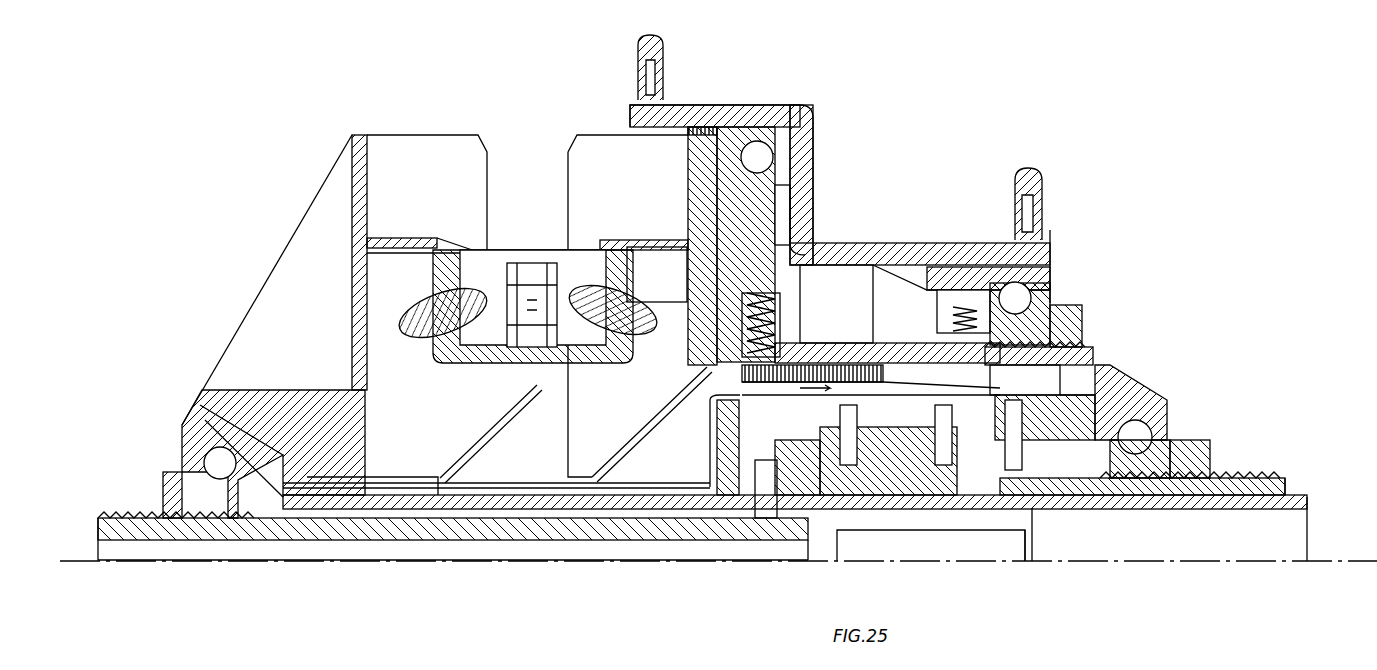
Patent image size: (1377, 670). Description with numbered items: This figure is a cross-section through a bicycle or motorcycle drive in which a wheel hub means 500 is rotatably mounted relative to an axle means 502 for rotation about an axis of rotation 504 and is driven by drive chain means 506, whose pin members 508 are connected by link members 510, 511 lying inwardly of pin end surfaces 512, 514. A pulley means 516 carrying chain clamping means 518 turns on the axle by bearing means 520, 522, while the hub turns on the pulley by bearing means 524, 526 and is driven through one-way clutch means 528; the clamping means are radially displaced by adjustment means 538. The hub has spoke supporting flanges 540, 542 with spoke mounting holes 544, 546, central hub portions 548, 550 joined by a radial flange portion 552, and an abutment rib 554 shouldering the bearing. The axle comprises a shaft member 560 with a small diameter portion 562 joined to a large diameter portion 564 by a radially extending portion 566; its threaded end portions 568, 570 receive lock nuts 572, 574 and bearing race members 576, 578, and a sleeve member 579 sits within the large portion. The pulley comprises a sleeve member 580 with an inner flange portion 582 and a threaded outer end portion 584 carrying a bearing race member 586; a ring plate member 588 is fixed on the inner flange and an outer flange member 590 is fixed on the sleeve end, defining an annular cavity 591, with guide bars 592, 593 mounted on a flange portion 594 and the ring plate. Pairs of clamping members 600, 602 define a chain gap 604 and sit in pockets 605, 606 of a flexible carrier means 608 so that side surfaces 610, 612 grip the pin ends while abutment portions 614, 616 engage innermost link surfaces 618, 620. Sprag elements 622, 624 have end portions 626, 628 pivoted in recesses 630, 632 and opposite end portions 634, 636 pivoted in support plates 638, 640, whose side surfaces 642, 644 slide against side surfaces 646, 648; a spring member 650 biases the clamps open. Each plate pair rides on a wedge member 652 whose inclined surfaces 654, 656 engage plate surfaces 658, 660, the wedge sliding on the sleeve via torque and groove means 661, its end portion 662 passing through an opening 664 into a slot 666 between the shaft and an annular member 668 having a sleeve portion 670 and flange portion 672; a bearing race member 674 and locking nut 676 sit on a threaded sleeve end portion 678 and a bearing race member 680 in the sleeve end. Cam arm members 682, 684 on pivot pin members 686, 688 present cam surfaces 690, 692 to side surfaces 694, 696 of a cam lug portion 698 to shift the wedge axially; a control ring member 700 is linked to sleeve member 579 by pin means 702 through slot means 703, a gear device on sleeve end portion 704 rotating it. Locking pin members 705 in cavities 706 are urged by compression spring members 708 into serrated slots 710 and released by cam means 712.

The wheel hub means 500 is at (822, 106).
The axle means 502 is at (346, 552).
The axis of rotation 504 is at (1258, 562).
The drive chain means 506 is at (535, 240).
The pin members 508 is at (445, 362).
The link member 510 is at (480, 240).
The link member 511 is at (487, 220).
The pin end surface 512 is at (470, 250).
The pin end surface 514 is at (540, 262).
The pulley means 516 is at (296, 186).
The chain clamping means 518 is at (405, 232).
The bearing means 520 is at (158, 431).
The bearing means 522 is at (1185, 405).
The bearing means 524 is at (815, 105).
The bearing means 526 is at (1065, 248).
The one-way clutch means 528 is at (965, 300).
The adjustment means 538 is at (1030, 300).
The annular spoke supporting flange 540 is at (630, 112).
The annular spoke supporting flange 542 is at (1035, 175).
The spoke mounting hole 544 is at (636, 60).
The spoke mounting hole 546 is at (1050, 200).
The central annular hub portion 548 is at (787, 110).
The central annular hub portion 550 is at (1000, 245).
The radial flange portion 552 is at (800, 160).
The annular abutment rib 554 is at (900, 245).
The annular shaft member 560 is at (290, 548).
The small diameter portion 562 is at (445, 528).
The large diameter portion 564 is at (930, 500).
The radially extending portion 566 is at (770, 440).
The end portion 568 is at (108, 516).
The end portion 570 is at (1285, 482).
The lock nut 572 is at (165, 478).
The lock nut 574 is at (1205, 455).
The bearing race member 576 is at (200, 500).
The bearing race member 578 is at (1189, 431).
The sleeve member 579 is at (1200, 500).
The annular sleeve member 580 is at (615, 510).
The annular flange portion 582 is at (705, 328).
The threaded outer end portion 584 is at (258, 500).
The annular bearing race member 586 is at (290, 400).
The annular ring plate member 588 is at (695, 160).
The annular flange member 590 is at (275, 388).
The annular cavity 591 is at (520, 500).
The guide bar 592 is at (375, 140).
The guide bar 593 is at (600, 140).
The flange portion 594 is at (352, 150).
The clamping member 600 is at (460, 283).
The clamping member 602 is at (600, 240).
The chain gap 604 is at (528, 250).
The pocket 605 is at (440, 262).
The pocket 606 is at (657, 274).
The annular carrier means 608 is at (620, 250).
The clamp side surface 610 is at (532, 305).
The clamp side surface 612 is at (600, 345).
The chain link abutment portion 614 is at (520, 360).
The chain link abutment portion 616 is at (540, 358).
The radially innermost surface 618 is at (500, 360).
The radially innermost surface 620 is at (562, 345).
The sprag clutch type element 622 is at (391, 323).
The sprag clutch type element 624 is at (628, 338).
The end portion 626 is at (425, 340).
The end portion 628 is at (590, 260).
The recess 630 is at (425, 305).
The recess 632 is at (560, 260).
The end portion 634 is at (360, 345).
The end portion 636 is at (666, 292).
The support plate 638 is at (365, 262).
The support plate 640 is at (670, 250).
The side surface 642 is at (365, 284).
The side surface 644 is at (780, 215).
The side surface 646 is at (365, 303).
The side surface 648 is at (765, 240).
The annular spring member 650 is at (530, 355).
The wedge member 652 is at (665, 482).
The inclined surface 654 is at (438, 468).
The inclined surface 656 is at (628, 432).
The inclined support plate surface 658 is at (452, 478).
The inclined support plate surface 660 is at (640, 430).
The torque and groove means 661 is at (425, 520).
The end portion 662 is at (850, 330).
The opening 664 is at (661, 470).
The axially extending slot 666 is at (830, 336).
The annular member 668 is at (742, 375).
The sleeve portion 670 is at (775, 300).
The radially extending flange portion 672 is at (790, 190).
The bearing race member 674 is at (1070, 325).
The locking nut 676 is at (1085, 345).
The threaded sleeve end portion 678 is at (1090, 360).
The bearing race member 680 is at (1130, 385).
The cam arm member 682 is at (885, 372).
The cam arm member 684 is at (1022, 415).
The pivot pin member 686 is at (890, 475).
The pivot pin member 688 is at (1030, 440).
The cam surface 690 is at (875, 420).
The cam surface 692 is at (1030, 430).
The side surface 694 is at (955, 425).
The side surface 696 is at (990, 380).
The cam lug portion 698 is at (985, 420).
The annular control ring member 700 is at (745, 430).
The pin means 702 is at (795, 480).
The slot means 703 is at (820, 498).
The sleeve end portion 704 is at (1310, 500).
The locking pin member 705 is at (660, 368).
The cavity 706 is at (860, 250).
The compression spring member 708 is at (800, 260).
The serrated slot 710 is at (705, 395).
The cam means 712 is at (735, 410).